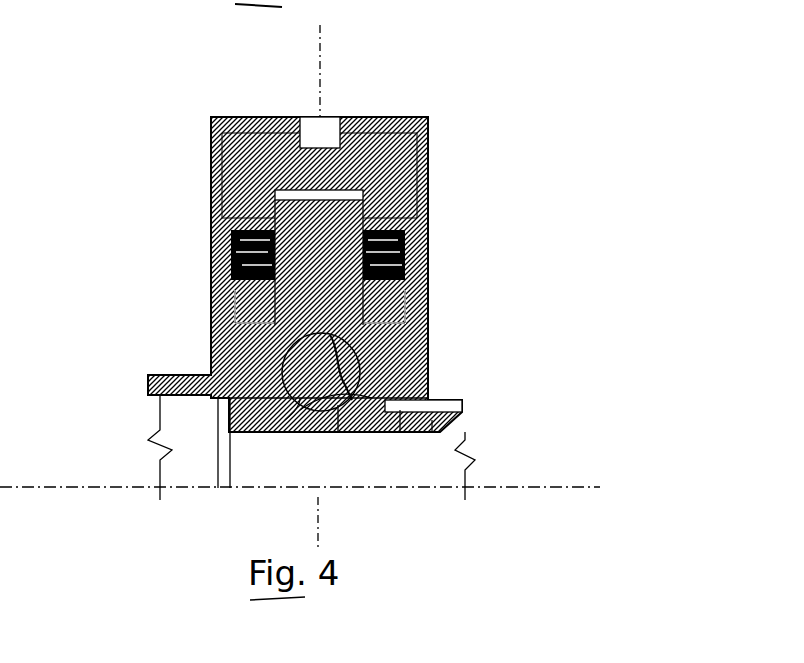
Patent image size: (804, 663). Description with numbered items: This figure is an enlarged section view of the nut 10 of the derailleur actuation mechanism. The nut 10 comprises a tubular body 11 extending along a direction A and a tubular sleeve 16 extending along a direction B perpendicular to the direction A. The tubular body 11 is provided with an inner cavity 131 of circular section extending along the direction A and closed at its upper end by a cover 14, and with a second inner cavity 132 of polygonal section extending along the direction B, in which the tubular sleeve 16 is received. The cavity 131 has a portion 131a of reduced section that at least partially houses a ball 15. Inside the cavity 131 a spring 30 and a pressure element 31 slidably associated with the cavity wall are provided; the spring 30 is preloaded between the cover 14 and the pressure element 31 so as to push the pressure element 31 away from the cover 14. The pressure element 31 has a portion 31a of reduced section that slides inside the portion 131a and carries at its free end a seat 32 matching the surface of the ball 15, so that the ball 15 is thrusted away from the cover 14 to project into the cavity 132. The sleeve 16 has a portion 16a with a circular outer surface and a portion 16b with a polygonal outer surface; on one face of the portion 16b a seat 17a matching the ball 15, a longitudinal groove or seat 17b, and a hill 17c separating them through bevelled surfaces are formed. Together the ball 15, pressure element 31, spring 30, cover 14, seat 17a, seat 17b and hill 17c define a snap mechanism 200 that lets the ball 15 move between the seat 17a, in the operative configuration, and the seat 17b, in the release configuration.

The nut 10 is at (120, 190).
The tubular body 11 is at (428, 345).
The cover 14 is at (387, 117).
The ball 15 is at (355, 440).
The tubular sleeve 16 is at (478, 425).
The portion with circular outer surface 16a is at (170, 375).
The portion with polygonal outer surface 16b is at (257, 445).
The seat 17a is at (300, 440).
The longitudinal groove or seat 17b is at (432, 455).
The hill 17c is at (400, 440).
The spring 30 is at (380, 245).
The pressure element 31 is at (383, 300).
The portion with reduced section 31a is at (285, 347).
The seat 32 is at (338, 440).
The inner cavity 131 is at (356, 197).
The portion of reduced section 131a is at (365, 375).
The second inner cavity 132 is at (445, 400).
The snap mechanism 200 is at (200, 273).
The direction A is at (322, 42).
The direction B is at (590, 487).